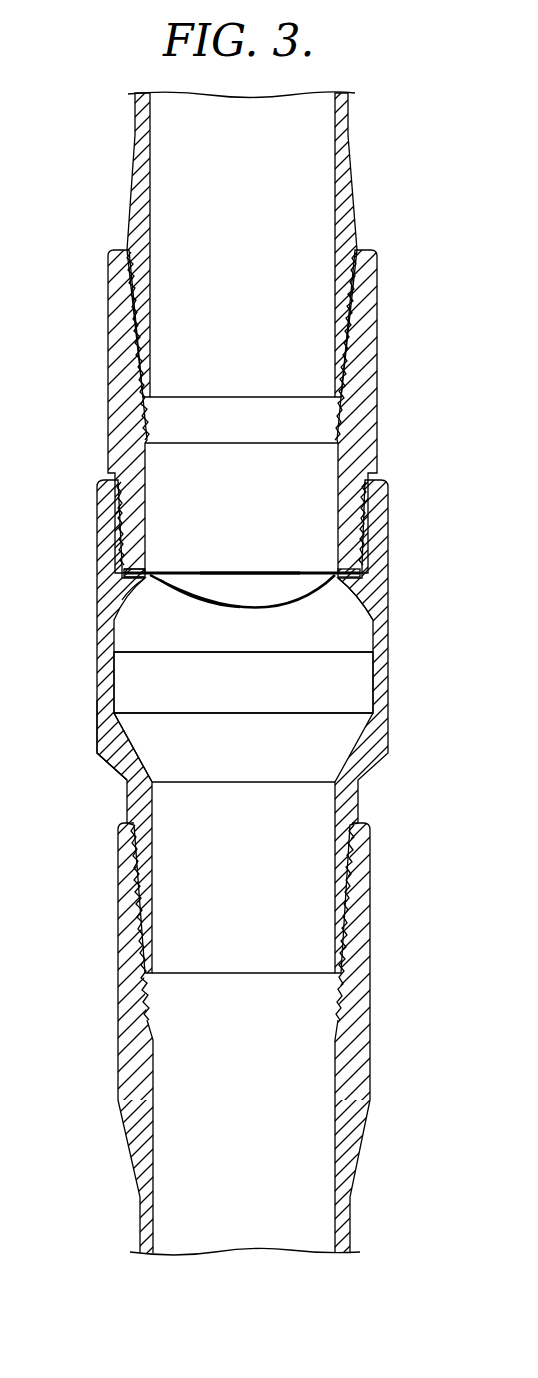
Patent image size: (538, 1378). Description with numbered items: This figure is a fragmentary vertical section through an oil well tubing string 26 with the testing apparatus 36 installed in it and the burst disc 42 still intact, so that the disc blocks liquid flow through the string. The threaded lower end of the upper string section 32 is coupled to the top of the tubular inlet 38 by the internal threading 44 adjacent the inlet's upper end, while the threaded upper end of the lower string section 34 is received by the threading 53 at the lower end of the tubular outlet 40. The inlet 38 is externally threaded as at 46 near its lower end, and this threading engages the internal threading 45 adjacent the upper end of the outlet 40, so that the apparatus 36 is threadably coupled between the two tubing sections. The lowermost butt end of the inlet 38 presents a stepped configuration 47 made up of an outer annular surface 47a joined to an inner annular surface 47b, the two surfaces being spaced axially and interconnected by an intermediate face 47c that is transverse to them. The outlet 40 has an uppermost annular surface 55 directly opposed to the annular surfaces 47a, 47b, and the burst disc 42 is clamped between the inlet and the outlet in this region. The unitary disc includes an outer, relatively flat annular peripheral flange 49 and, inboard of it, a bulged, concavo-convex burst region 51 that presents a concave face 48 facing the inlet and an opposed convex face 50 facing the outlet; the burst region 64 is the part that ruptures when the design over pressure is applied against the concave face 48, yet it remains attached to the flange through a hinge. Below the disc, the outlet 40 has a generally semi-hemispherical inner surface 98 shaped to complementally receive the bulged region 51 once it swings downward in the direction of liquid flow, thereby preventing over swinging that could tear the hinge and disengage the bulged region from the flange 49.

The tubing string 26 is at (358, 121).
The tubing string section 32 is at (147, 135).
The tubing string section 34 is at (348, 1203).
The apparatus 36 is at (98, 759).
The tubular inlet 38 is at (378, 331).
The tubular outlet 40 is at (104, 690).
The burst disc 42 is at (300, 574).
The internal threading 44 is at (352, 292).
The internal threading 45 is at (119, 514).
The external threading 46 is at (367, 520).
The stepped configuration 47 is at (138, 576).
The outer annular surface 47a is at (125, 568).
The inner annular surface 47b is at (140, 592).
The intermediate face 47c is at (124, 582).
The concave face 48 is at (200, 602).
The annular peripheral flange 49 is at (358, 567).
The convex face 50 is at (282, 606).
The burst region 51 is at (235, 610).
The threading 53 is at (366, 920).
The uppermost annular surface 55 is at (375, 600).
The burst region 64 is at (263, 596).
The semi-hemispherical inner surface 98 is at (133, 758).